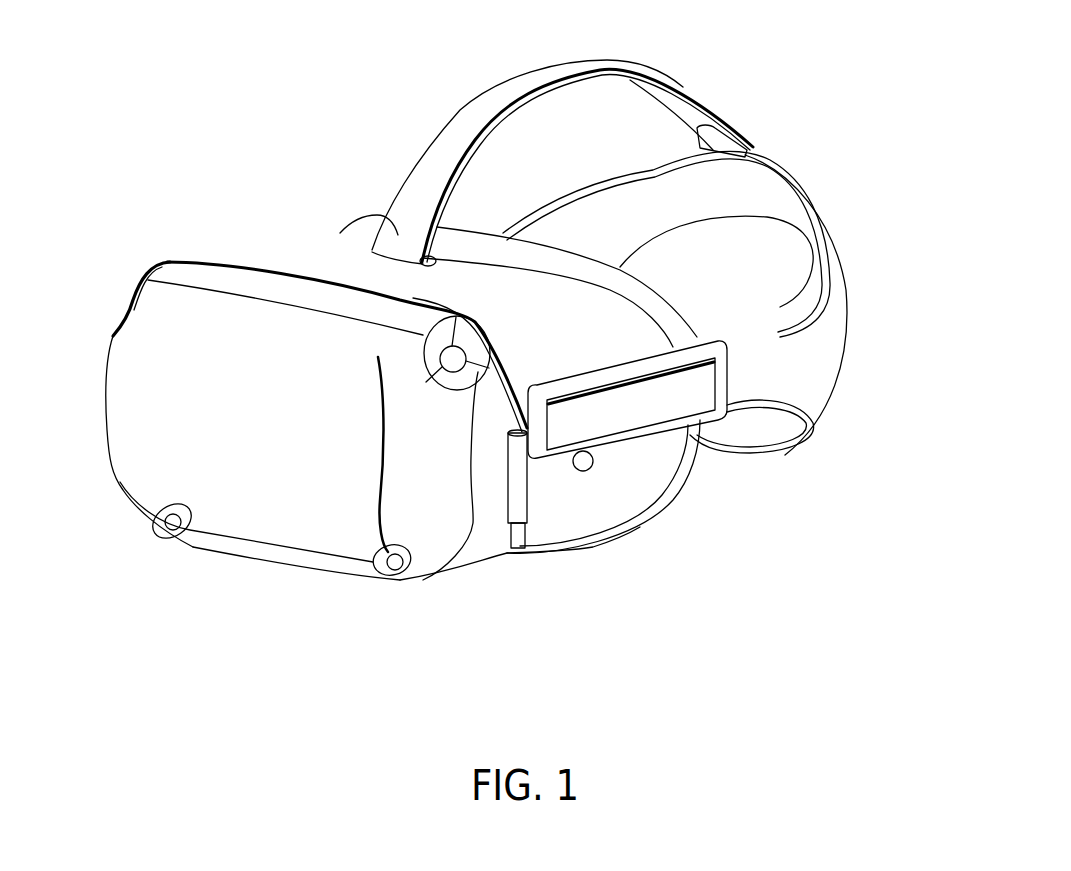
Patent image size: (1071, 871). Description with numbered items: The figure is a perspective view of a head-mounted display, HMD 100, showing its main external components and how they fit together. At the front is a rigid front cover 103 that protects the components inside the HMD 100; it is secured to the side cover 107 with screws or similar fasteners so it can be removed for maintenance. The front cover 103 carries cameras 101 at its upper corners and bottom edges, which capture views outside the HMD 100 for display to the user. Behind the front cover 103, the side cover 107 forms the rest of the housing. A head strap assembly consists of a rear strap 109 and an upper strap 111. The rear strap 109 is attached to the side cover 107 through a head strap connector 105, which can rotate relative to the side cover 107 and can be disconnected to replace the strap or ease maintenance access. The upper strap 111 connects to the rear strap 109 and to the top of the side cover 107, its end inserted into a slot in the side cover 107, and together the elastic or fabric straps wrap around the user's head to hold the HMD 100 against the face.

The head-mounted display 100 is at (143, 219).
The cameras 101 is at (452, 362).
The front cover 103 is at (233, 491).
The head strap connector 105 is at (650, 414).
The side cover 107 is at (610, 497).
The rear strap 109 is at (835, 308).
The upper strap 111 is at (427, 160).